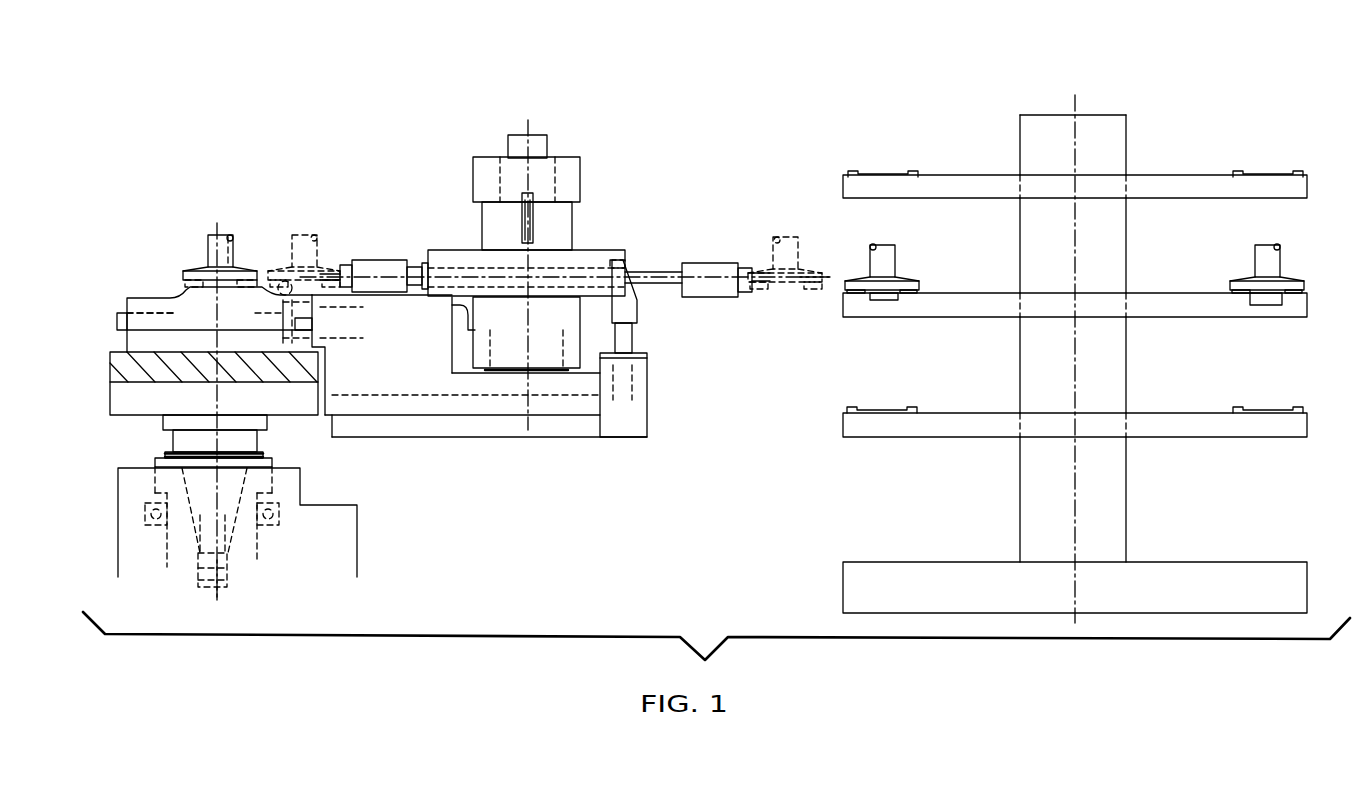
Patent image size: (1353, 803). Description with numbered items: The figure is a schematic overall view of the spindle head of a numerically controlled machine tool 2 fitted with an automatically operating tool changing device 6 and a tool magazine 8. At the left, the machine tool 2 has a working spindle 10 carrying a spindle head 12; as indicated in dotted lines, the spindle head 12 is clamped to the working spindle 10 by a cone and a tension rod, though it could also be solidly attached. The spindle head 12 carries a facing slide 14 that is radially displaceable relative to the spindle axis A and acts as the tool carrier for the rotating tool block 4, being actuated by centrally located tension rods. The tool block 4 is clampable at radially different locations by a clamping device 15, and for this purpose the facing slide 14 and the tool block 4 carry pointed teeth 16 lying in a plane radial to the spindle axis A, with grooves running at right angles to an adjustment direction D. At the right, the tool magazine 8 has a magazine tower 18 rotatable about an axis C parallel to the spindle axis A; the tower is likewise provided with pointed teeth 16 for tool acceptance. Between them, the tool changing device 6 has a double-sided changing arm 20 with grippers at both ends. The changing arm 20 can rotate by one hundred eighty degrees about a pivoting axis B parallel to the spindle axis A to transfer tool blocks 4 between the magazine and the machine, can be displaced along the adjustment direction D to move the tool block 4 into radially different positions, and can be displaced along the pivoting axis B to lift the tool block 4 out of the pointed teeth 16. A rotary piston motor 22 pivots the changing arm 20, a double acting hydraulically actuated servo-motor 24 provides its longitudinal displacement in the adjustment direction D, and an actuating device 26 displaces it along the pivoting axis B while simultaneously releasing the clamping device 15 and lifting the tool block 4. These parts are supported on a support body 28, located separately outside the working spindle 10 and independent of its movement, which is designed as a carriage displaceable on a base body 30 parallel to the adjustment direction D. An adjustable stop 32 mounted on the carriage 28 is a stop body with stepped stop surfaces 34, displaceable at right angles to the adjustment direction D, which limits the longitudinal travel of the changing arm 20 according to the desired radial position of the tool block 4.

The numerically controlled machine tool 2 is at (378, 563).
The tool block 4 is at (216, 222).
The tool changing device 6 is at (678, 152).
The tool magazine 8 is at (1197, 103).
The working spindle 10 is at (250, 537).
The spindle head 12 is at (303, 407).
The facing slide 14 is at (150, 313).
The clamping device 15 is at (210, 312).
The pointed teeth 16 is at (290, 268).
The magazine tower 18 is at (1017, 497).
The changing arm 20 is at (643, 267).
The rotary piston motor 22 is at (573, 172).
The servo-motor 24 is at (573, 258).
The actuating device 26 is at (388, 332).
The support body 28 is at (450, 387).
The base body 30 is at (558, 430).
The adjustable stop 32 is at (675, 375).
The stepped stop surfaces 34 is at (637, 298).
The spindle axis A is at (217, 597).
The pivoting axis B is at (528, 128).
The axis of the magazine tower C is at (1077, 130).
The adjustment direction D is at (810, 282).